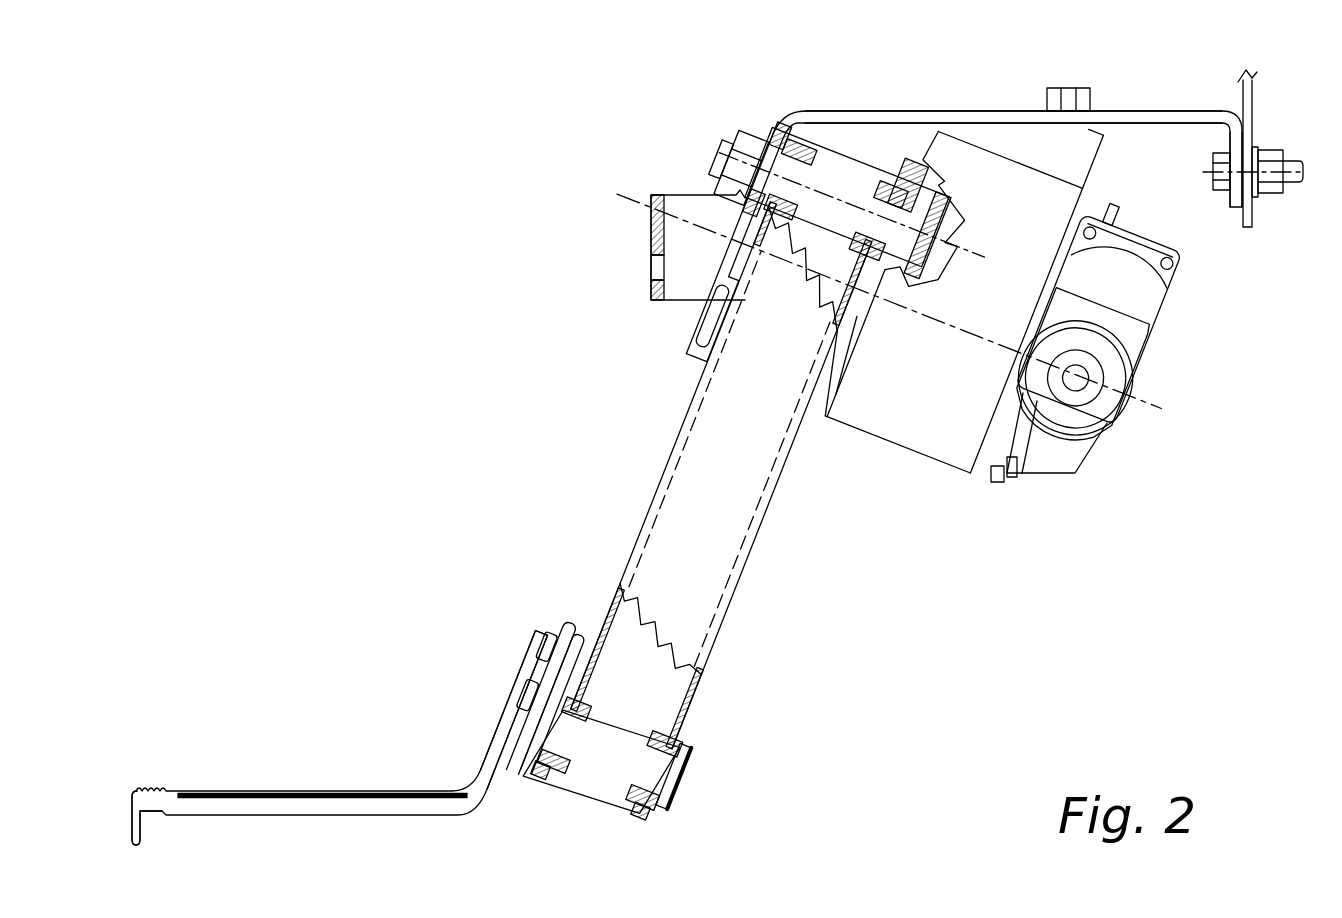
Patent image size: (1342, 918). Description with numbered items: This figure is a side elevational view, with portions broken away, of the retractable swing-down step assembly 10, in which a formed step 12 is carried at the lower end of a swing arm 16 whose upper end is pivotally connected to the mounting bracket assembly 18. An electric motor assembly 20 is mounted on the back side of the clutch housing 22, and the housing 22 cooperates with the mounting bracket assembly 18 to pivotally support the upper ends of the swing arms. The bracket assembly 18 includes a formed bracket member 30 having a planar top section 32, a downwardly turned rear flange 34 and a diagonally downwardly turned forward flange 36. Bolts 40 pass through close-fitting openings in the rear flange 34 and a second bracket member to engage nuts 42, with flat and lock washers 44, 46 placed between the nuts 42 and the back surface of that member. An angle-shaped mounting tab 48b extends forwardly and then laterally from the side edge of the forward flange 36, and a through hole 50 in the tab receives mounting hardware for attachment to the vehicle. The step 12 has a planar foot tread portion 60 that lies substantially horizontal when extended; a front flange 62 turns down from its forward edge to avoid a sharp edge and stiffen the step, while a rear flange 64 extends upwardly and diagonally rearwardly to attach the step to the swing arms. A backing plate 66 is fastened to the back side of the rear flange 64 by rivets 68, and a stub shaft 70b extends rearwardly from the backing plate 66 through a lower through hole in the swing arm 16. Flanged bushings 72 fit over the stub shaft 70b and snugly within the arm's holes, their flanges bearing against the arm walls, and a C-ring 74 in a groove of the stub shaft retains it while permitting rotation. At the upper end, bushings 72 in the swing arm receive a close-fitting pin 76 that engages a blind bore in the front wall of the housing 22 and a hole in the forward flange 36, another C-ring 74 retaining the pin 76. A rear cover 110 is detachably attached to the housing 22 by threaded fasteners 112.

The step assembly 10 is at (548, 139).
The formed step 12 is at (300, 767).
The swing arm 16 is at (717, 575).
The mounting bracket assembly 18 is at (963, 70).
The electric motor assembly 20 is at (1172, 308).
The clutch housing 22 is at (886, 423).
The bracket member 30 is at (988, 92).
The planar top section 32 is at (958, 115).
The rear flange 34 is at (1237, 207).
The forward flange 36 is at (742, 228).
The bolt 40 is at (1212, 165).
The nut 42 is at (1272, 155).
The flat washer 44 is at (1248, 205).
The lock washer 46 is at (1260, 193).
The mounting tab 48b is at (651, 226).
The through hole 50 is at (651, 272).
The foot tread portion 60 is at (283, 808).
The front flange 62 is at (135, 806).
The rear flange 64 is at (508, 753).
The backing plate 66 is at (598, 617).
The rivet 68 is at (537, 648).
The stub shaft 70b is at (627, 768).
The flanged bushing 72 is at (797, 130).
The C-ring 74 is at (765, 152).
The pin 76 is at (827, 183).
The rear cover 110 is at (990, 483).
The threaded fastener 112 is at (1014, 478).